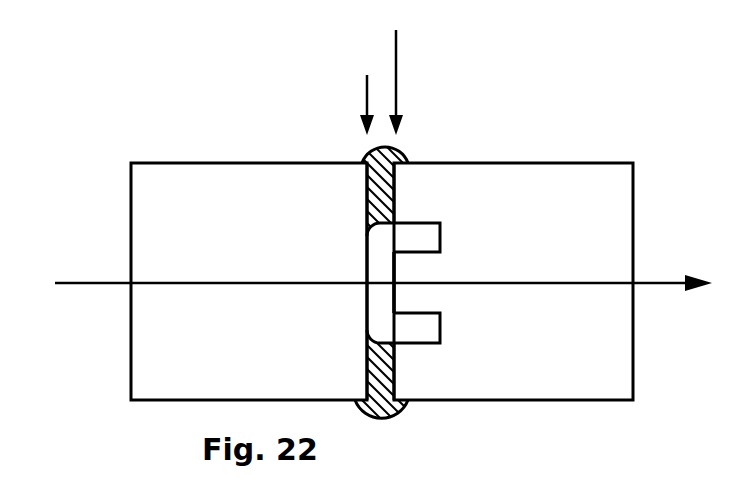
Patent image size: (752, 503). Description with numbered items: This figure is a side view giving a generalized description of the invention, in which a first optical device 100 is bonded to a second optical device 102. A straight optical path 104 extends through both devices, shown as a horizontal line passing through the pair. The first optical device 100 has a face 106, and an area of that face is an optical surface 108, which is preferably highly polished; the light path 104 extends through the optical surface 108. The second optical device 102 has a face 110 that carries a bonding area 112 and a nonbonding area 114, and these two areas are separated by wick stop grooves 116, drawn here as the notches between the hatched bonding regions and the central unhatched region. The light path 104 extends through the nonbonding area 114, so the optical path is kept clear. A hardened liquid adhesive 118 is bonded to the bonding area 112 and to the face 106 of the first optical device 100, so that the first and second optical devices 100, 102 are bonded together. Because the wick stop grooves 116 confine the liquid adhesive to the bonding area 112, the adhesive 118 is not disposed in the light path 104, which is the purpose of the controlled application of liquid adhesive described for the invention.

The first optical device 100 is at (325, 362).
The second optical device 102 is at (618, 364).
The optical path 104 is at (98, 283).
The face 106 is at (366, 92).
The optical surface 108 is at (367, 273).
The face 110 is at (400, 69).
The bonding area 112 is at (395, 192).
The nonbonding area 114 is at (397, 270).
The wick stop grooves 116 is at (420, 237).
The hardened liquid adhesive 118 is at (383, 172).